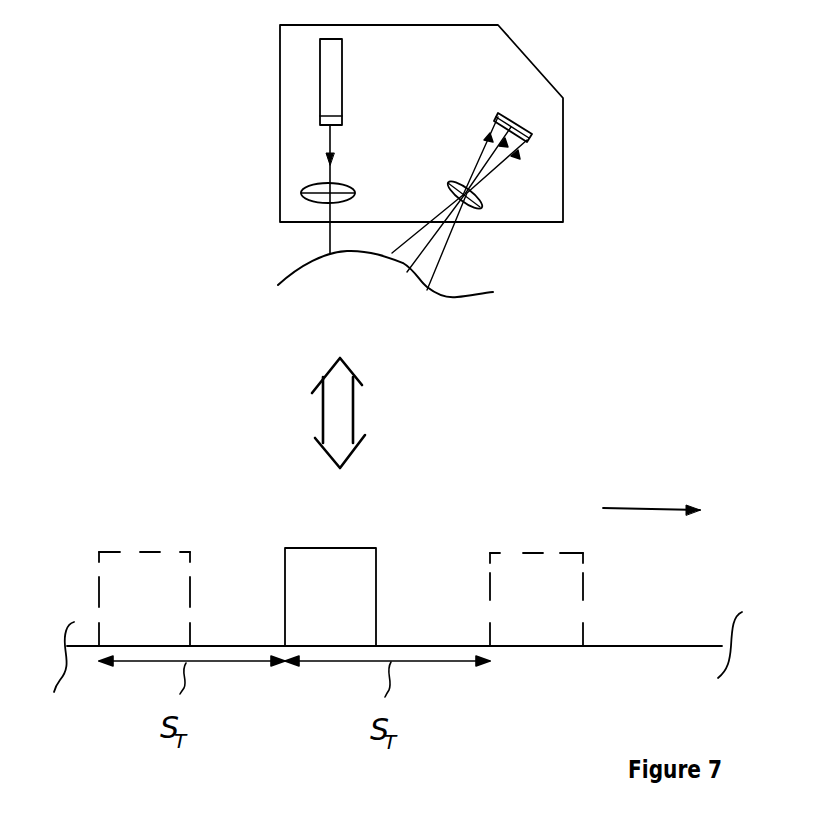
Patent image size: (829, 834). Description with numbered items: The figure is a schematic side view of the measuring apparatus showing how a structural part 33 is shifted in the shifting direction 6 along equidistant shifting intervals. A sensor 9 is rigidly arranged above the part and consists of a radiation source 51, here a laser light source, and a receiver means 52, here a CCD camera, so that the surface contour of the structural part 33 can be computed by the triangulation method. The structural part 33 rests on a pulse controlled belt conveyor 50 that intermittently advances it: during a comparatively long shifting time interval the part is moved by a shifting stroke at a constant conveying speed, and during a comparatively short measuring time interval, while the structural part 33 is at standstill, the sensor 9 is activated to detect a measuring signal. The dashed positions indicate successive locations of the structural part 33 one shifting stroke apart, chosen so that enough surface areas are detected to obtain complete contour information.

The sensor 9 is at (563, 148).
The radiation source 51 is at (322, 87).
The receiver means 52 is at (531, 137).
The structural part 33 is at (373, 572).
The belt conveyor 50 is at (683, 645).
The shifting direction 6 is at (660, 507).